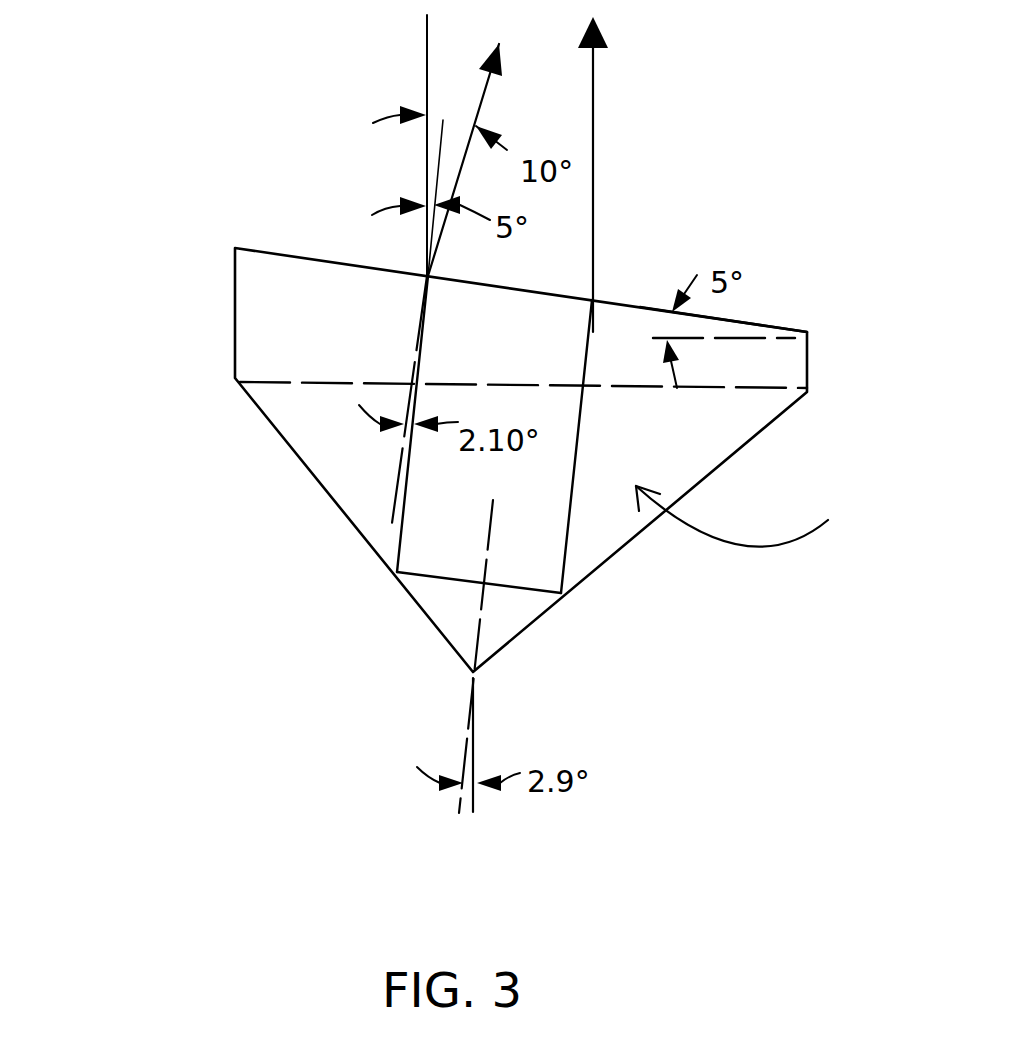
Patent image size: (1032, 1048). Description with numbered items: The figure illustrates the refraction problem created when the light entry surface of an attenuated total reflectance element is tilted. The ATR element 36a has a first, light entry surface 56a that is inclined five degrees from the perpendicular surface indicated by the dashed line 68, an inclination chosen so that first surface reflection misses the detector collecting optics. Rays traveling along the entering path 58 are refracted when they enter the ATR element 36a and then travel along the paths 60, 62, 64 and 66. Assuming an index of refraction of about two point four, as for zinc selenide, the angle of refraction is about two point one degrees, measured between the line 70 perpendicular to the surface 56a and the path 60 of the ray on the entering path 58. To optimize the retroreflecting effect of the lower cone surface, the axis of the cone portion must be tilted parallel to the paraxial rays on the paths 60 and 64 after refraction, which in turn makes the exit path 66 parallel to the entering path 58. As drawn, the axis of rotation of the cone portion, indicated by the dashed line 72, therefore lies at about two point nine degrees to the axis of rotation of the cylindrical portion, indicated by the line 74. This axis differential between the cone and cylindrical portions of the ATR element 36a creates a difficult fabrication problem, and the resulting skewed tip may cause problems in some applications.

The ATR element 36a is at (763, 516).
The light entry surface 56a is at (263, 250).
The entering path 58 is at (427, 52).
The path 60 is at (397, 538).
The path 62 is at (520, 594).
The path 64 is at (592, 330).
The path 66 is at (593, 180).
The dashed line 68 is at (808, 338).
The line perpendicular to surface 56a 70 is at (393, 492).
The axis of rotation of the cone portion 72 is at (467, 722).
The axis of rotation of the cylindrical portion 74 is at (475, 752).